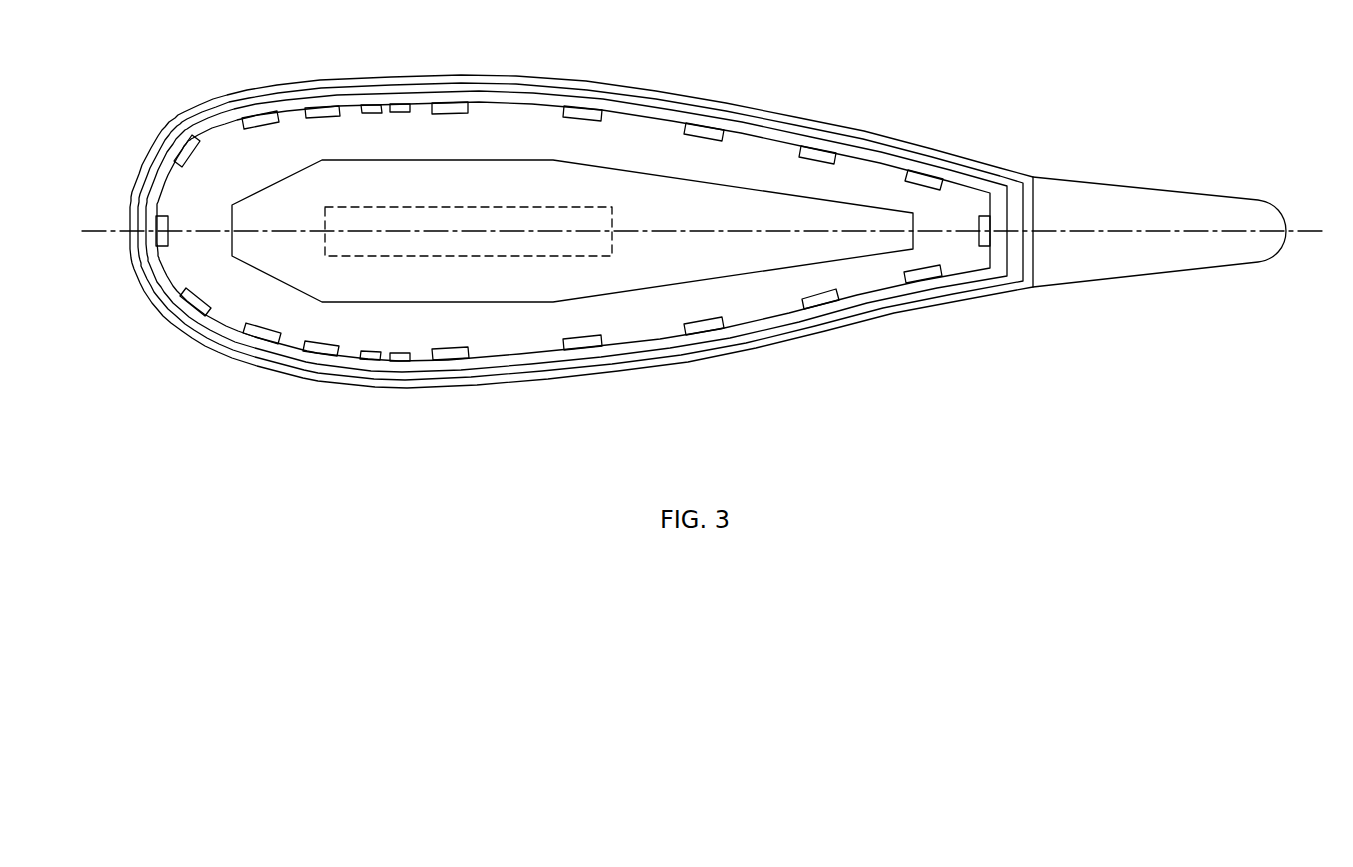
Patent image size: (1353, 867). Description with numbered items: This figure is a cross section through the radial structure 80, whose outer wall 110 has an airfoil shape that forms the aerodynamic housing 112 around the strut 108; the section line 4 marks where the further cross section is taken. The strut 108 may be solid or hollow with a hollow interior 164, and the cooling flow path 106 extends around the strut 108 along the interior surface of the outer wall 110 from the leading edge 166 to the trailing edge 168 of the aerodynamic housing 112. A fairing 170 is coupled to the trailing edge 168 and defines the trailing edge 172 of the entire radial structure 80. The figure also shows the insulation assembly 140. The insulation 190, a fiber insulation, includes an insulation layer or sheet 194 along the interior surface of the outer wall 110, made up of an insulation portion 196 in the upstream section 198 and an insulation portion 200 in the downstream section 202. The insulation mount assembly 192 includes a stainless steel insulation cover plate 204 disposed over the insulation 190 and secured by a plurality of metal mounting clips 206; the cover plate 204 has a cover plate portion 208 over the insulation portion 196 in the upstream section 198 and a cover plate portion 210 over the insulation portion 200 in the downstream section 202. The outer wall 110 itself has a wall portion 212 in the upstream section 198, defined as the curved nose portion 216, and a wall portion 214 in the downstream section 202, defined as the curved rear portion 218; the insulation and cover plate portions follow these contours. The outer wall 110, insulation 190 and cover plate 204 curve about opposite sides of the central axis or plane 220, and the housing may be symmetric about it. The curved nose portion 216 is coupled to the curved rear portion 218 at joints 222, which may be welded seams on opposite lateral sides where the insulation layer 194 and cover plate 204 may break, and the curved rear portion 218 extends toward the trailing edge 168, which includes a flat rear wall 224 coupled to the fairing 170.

The section line 4- 4 is at (82, 231).
The radial structure 80 is at (818, 72).
The cooling flow path 106 is at (497, 130).
The strut 108 is at (644, 217).
The outer wall 110 is at (230, 92).
The aerodynamic housing 112 is at (200, 103).
The insulation assembly 140 is at (702, 95).
The hollow interior 164 is at (470, 206).
The leading edge 166 is at (129, 218).
The trailing edge 168 is at (1036, 244).
The fairing 170 is at (1147, 188).
The trailing edge 172 is at (1286, 233).
The insulation 190 is at (775, 116).
The insulation mount assembly 192 is at (845, 168).
The insulation layer or sheet 194 is at (154, 303).
The insulation portion 196 is at (170, 322).
The upstream section 198 is at (160, 380).
The insulation portion 200 is at (406, 375).
The downstream section 202 is at (766, 400).
The insulation cover plate 204 is at (152, 274).
The mounting clips 206 is at (170, 222).
The cover plate portion 208 is at (153, 237).
The cover plate portion 210 is at (471, 368).
The wall portion 212 is at (307, 80).
The wall portion 214 is at (418, 87).
The curved nose portion 216 is at (151, 160).
The curved rear portion 218 is at (620, 85).
The central axis or plane 220 is at (1212, 231).
The joints 222 is at (386, 104).
The flat rear wall 224 is at (1036, 202).